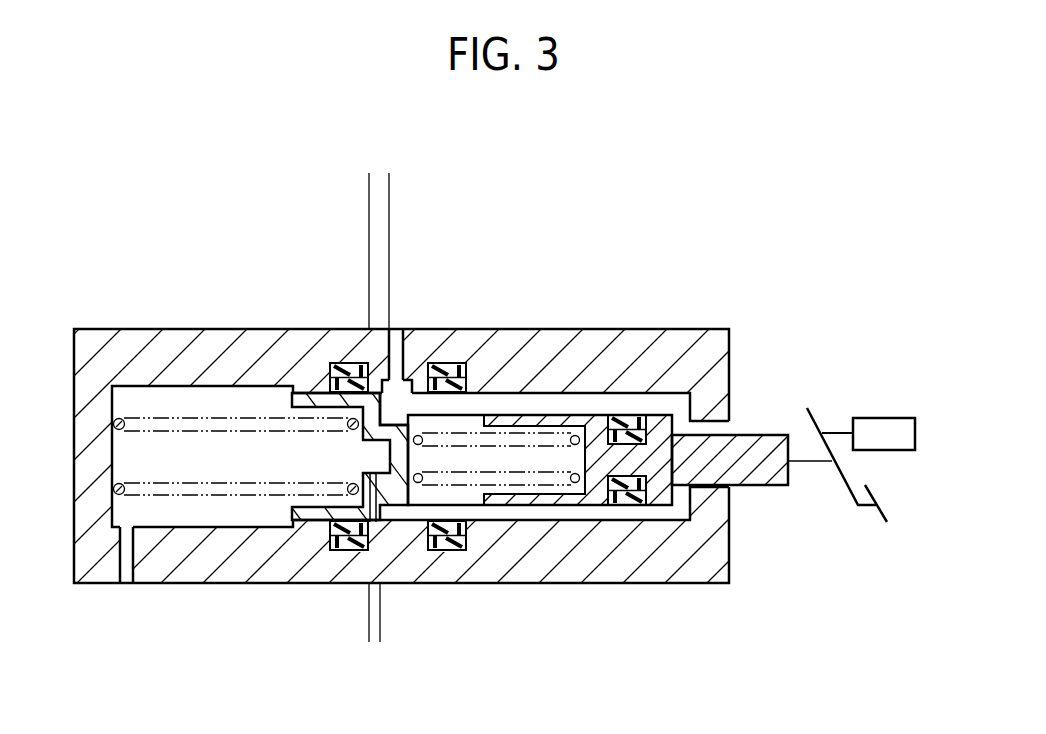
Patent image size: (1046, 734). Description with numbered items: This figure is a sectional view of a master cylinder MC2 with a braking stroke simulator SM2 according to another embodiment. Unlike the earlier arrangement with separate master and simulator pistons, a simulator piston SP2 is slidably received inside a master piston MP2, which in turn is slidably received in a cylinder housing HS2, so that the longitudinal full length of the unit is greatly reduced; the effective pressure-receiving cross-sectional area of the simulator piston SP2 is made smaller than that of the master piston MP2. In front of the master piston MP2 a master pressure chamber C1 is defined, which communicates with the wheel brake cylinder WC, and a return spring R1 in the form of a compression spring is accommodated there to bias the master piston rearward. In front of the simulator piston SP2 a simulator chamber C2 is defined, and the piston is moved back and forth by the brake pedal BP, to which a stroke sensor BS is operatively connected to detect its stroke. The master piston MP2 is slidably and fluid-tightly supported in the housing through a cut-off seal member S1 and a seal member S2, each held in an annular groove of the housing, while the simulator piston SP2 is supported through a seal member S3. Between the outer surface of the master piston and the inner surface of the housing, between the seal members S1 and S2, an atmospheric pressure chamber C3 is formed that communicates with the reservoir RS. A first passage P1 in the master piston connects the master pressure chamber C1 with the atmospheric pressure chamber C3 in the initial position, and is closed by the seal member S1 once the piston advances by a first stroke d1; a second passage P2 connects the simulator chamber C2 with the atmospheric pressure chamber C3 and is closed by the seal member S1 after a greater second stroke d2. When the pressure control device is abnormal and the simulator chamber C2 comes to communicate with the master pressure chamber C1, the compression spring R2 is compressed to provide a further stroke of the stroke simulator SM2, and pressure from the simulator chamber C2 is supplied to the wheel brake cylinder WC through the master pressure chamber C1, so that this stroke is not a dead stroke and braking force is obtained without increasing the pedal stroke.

The cylinder housing HS2 is at (100, 355).
The master cylinder MC2 is at (480, 429).
The return spring R1 is at (257, 423).
The second stroke d2 is at (413, 195).
The reservoir RS is at (397, 380).
The atmospheric pressure chamber C3 is at (397, 418).
The second passage P2 is at (405, 390).
The compression spring R2 is at (518, 437).
The stroke simulator SM2 is at (480, 429).
The stroke sensor BS is at (863, 417).
The brake pedal BP is at (889, 516).
The simulator piston SP2 is at (748, 467).
The seal member S3 is at (640, 507).
The master piston MP2 is at (574, 463).
The simulator chamber C2 is at (468, 512).
The seal member S2 is at (447, 553).
The first stroke d1 is at (399, 620).
The first passage P1 is at (383, 528).
The seal member S1 is at (345, 552).
The master pressure chamber C1 is at (207, 510).
The wheel brake cylinder WC is at (126, 583).